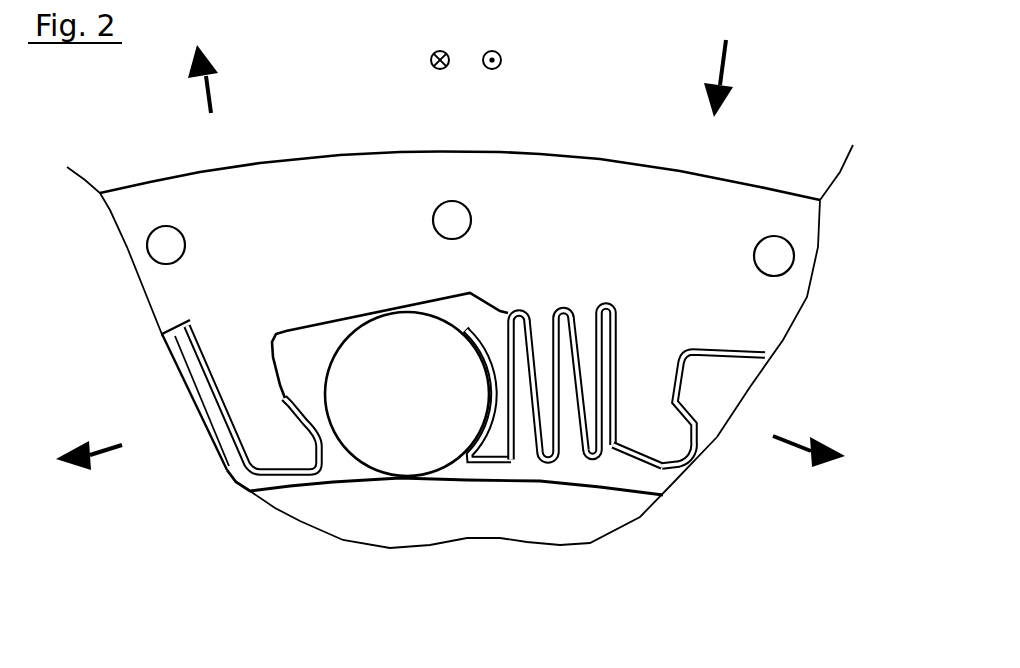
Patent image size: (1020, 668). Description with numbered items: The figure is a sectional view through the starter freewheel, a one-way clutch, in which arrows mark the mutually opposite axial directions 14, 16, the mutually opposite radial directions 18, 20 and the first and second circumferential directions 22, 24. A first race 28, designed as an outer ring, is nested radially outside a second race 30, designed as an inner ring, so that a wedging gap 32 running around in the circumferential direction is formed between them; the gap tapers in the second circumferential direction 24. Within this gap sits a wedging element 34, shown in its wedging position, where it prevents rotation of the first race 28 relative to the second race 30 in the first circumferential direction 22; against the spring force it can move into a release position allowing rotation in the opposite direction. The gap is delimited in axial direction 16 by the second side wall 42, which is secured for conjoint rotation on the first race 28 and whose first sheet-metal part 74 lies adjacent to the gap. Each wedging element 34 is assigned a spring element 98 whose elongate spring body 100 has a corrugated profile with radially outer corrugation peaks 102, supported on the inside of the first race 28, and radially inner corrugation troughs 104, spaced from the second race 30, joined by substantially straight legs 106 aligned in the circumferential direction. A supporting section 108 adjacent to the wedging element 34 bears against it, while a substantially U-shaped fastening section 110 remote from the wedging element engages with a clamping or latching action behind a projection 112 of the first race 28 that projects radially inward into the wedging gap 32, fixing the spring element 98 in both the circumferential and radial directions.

The axial direction 14 is at (503, 56).
The axial direction 16 is at (430, 60).
The radial direction 18 is at (200, 98).
The radial direction 20 is at (729, 62).
The first circumferential direction 22 is at (790, 445).
The second circumferential direction 24 is at (101, 456).
The first race 28 is at (320, 183).
The second race 30 is at (401, 530).
The wedging gap 32 is at (288, 340).
The wedging element 34 is at (374, 432).
The second side wall 42 is at (470, 364).
The first sheet-metal part 74 is at (470, 364).
The spring element 98 is at (469, 529).
The spring body 100 is at (606, 481).
The radially outer corrugation peaks 102 is at (680, 364).
The radially inner corrugation troughs 104 is at (585, 463).
The legs 106 is at (512, 387).
The supporting section 108 is at (493, 395).
The fastening section 110 is at (647, 468).
The projection 112 is at (675, 468).